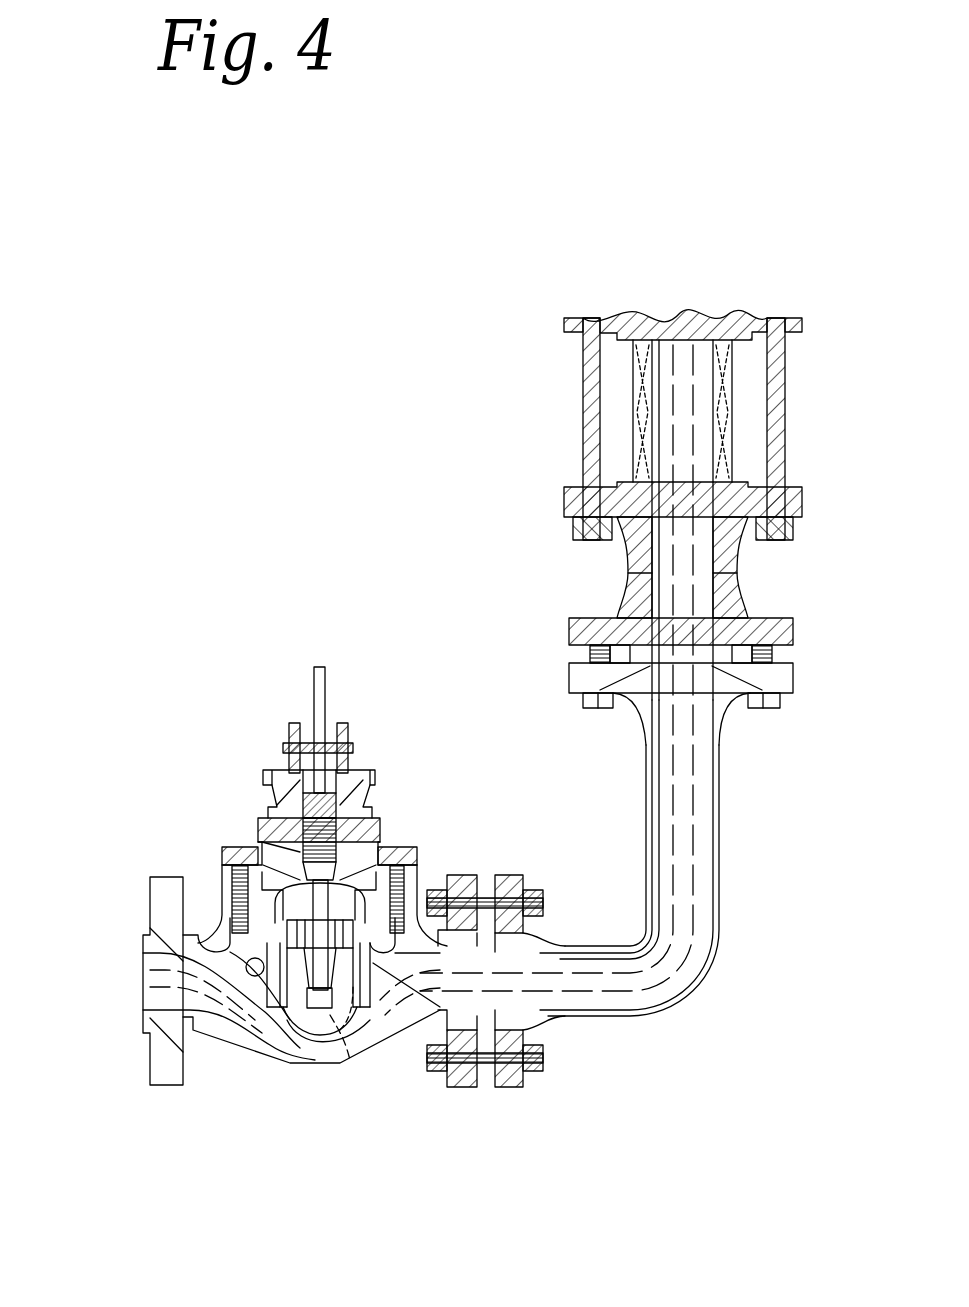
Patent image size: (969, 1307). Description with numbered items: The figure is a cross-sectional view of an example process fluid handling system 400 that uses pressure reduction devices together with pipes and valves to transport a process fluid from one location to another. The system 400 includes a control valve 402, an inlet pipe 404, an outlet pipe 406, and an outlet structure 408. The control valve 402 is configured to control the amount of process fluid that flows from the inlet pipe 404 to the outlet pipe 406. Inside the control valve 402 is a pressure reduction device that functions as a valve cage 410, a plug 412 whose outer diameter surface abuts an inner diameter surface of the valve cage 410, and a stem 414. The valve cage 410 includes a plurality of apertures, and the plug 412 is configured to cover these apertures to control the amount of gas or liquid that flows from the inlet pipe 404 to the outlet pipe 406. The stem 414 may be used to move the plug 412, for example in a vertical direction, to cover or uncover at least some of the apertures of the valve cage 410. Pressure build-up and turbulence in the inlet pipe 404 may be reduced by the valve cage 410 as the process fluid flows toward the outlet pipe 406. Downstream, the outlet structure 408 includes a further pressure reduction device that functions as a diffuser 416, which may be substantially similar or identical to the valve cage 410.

The process fluid handling system 400 is at (434, 273).
The control valve 402 is at (270, 773).
The inlet pipe 404 is at (150, 985).
The outlet pipe 406 is at (665, 822).
The outlet structure 408 is at (740, 562).
The valve cage 410 is at (280, 990).
The plug 412 is at (333, 937).
The stem 414 is at (318, 667).
The diffuser 416 is at (735, 407).